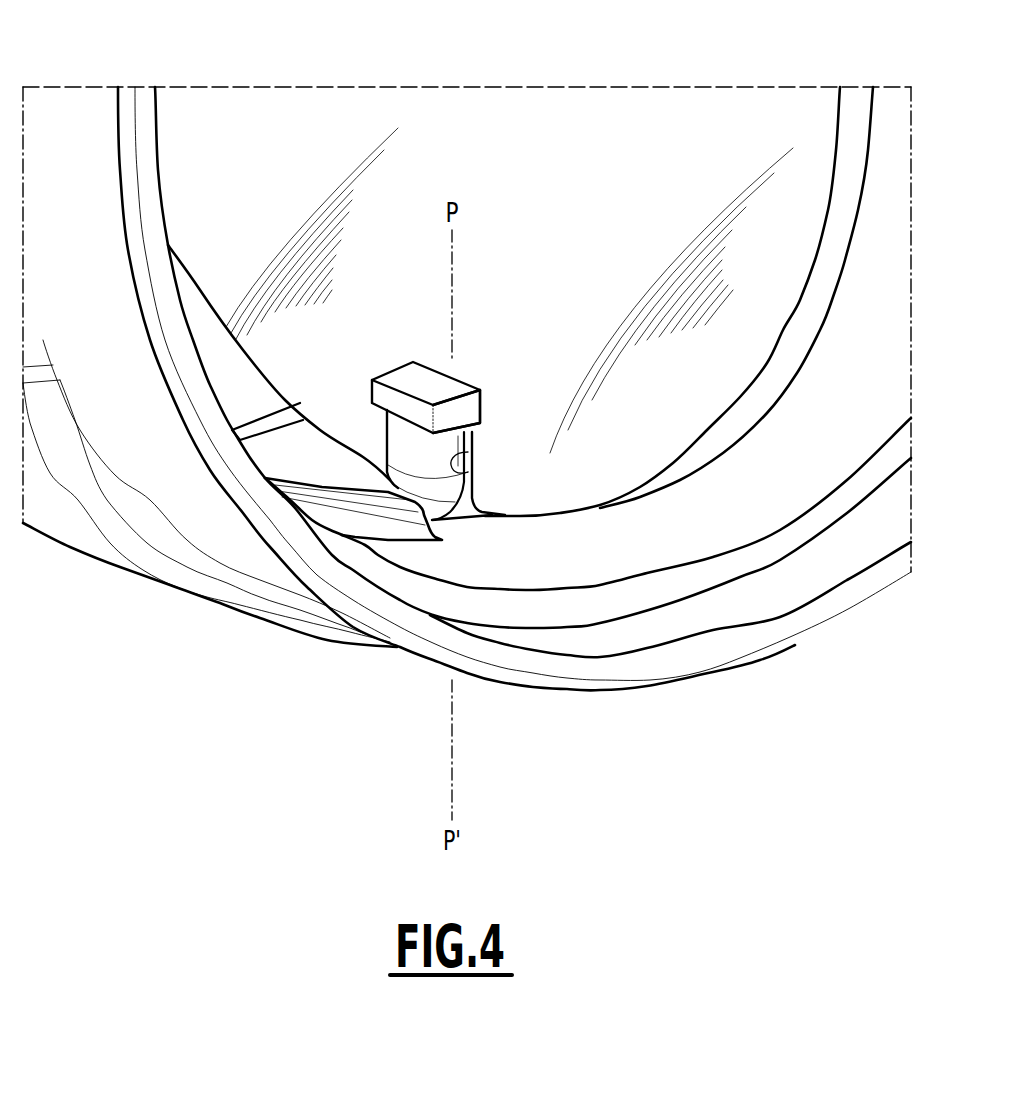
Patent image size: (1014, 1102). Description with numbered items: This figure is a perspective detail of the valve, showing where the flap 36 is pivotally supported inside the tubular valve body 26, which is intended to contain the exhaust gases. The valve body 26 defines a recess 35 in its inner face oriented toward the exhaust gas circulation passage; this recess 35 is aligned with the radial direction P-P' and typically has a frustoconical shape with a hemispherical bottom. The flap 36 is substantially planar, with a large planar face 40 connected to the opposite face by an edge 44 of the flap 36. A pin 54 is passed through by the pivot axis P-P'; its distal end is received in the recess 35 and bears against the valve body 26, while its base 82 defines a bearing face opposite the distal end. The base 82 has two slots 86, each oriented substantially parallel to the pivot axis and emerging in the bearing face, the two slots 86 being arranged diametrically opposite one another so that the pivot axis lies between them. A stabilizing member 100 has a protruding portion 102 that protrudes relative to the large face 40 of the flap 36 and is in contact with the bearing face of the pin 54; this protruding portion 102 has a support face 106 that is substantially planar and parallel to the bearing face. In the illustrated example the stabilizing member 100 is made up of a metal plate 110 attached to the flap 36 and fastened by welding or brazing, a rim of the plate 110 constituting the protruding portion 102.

The valve body 26 is at (668, 548).
The recess 35 is at (490, 522).
The flap 36 is at (735, 303).
The large face 40 is at (218, 140).
The edge 44 is at (770, 383).
The pin 54 is at (413, 465).
The base 82 is at (398, 445).
The slot 86 is at (453, 458).
The stabilizing member 100 is at (430, 399).
The protruding portion 102 is at (400, 402).
The support face 106 is at (383, 412).
The metal plate 110 is at (462, 415).